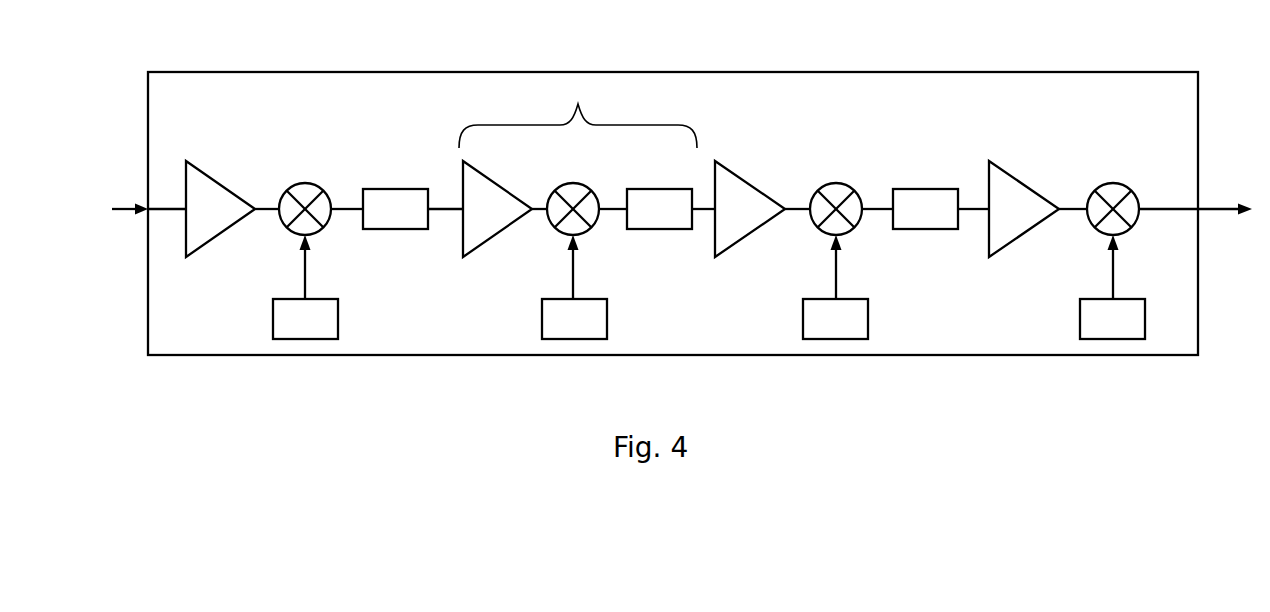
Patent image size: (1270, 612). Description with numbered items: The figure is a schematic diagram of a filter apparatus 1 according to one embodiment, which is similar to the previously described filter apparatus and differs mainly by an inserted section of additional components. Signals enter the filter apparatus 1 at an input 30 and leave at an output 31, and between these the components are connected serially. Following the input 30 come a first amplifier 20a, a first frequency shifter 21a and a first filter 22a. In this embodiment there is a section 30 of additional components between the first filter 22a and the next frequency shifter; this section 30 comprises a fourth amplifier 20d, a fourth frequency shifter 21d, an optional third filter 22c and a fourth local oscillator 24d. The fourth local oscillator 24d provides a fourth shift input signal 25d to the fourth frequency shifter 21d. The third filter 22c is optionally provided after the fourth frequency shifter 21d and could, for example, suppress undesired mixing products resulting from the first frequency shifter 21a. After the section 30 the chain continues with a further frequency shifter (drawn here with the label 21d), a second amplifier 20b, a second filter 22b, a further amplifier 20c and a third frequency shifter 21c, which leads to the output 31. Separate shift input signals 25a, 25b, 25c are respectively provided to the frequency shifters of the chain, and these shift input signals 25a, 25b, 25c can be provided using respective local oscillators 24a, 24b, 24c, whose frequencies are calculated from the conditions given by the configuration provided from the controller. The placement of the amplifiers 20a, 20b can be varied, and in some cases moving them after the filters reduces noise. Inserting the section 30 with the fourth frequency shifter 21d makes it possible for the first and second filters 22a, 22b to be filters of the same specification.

The filter apparatus 1 is at (1005, 72).
The input / section of additional components 30 is at (125, 209).
The output 31 is at (1233, 209).
The first amplifier 20a is at (236, 219).
The second amplifier 20b is at (720, 219).
The amplifier 20c is at (994, 219).
The fourth amplifier 20d is at (513, 219).
The first frequency shifter 21a is at (305, 184).
The third frequency shifter 21c is at (1108, 186).
The fourth frequency shifter 21d is at (573, 184).
The first filter 22a is at (373, 219).
The second filter 22b is at (903, 219).
The third filter 22c is at (638, 219).
The local oscillator 24a is at (283, 329).
The local oscillator 24b is at (813, 329).
The local oscillator 24c is at (1091, 329).
The fourth local oscillator 24d is at (552, 329).
The first shift input signal 25a is at (304, 267).
The second shift input signal 25b is at (836, 267).
The third shift input signal 25c is at (1113, 267).
The fourth shift input signal 25d is at (573, 267).